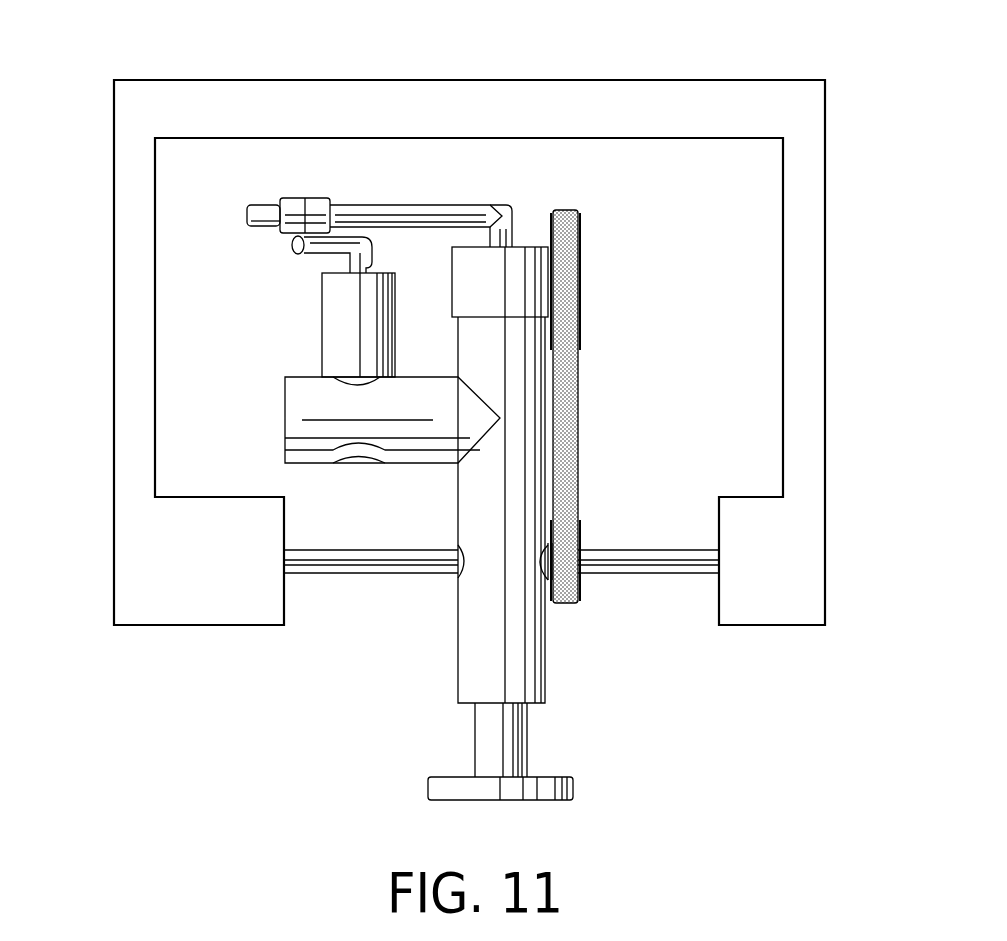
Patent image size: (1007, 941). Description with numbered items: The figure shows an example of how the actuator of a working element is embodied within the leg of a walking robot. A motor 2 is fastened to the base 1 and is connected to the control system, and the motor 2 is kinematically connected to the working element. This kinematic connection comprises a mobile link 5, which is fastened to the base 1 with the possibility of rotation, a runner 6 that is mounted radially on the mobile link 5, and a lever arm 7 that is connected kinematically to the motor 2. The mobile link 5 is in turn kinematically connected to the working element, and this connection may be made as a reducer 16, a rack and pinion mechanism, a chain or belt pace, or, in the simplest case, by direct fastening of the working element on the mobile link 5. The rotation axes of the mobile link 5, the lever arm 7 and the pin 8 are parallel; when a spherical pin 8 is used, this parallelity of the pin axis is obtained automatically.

The base 1 is at (805, 120).
The motor 2 is at (338, 343).
The mobile link 5 is at (393, 212).
The runner 6 is at (290, 210).
The lever arm 7 is at (328, 243).
The pin 8 is at (303, 236).
The reducer 16 is at (513, 262).